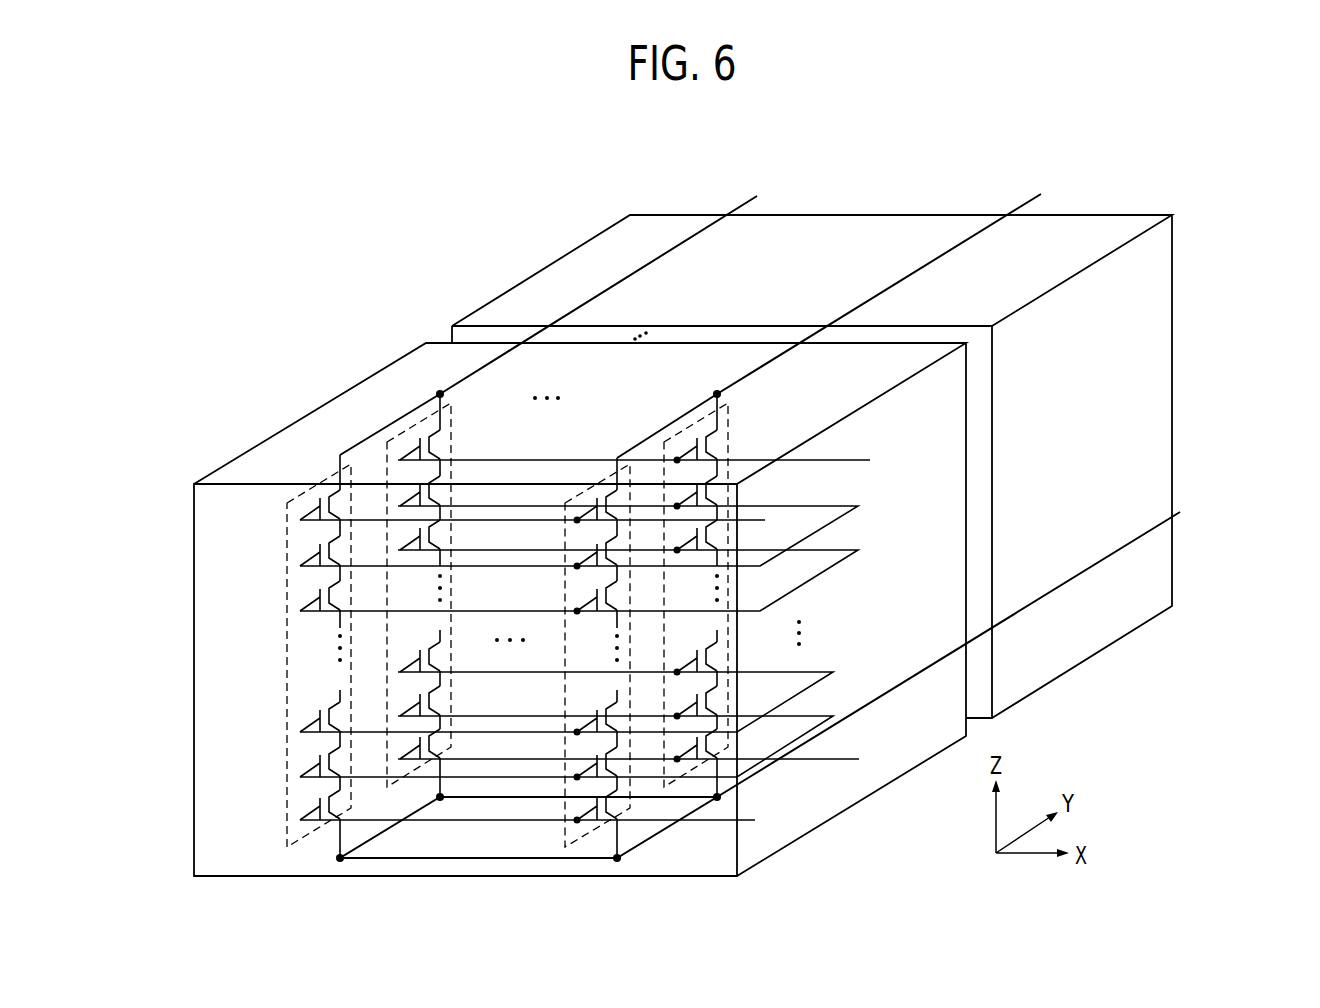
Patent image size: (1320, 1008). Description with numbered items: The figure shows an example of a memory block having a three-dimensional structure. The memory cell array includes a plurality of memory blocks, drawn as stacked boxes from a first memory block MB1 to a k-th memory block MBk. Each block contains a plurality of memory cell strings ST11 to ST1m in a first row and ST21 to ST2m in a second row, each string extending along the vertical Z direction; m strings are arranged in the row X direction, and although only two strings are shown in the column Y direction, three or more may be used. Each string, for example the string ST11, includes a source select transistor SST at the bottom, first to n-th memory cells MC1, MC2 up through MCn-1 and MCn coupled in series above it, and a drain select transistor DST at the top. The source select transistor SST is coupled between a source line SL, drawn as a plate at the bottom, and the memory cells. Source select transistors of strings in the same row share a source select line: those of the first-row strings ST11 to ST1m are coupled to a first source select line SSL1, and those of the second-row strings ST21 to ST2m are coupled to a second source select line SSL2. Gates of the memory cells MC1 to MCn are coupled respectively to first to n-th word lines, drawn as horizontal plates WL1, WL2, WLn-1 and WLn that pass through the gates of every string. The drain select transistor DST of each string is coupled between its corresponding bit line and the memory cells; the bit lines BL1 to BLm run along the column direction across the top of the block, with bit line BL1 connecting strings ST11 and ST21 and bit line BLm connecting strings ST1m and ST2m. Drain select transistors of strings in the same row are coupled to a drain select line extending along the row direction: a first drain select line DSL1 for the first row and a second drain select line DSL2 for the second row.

The memory block MBk is at (560, 258).
The memory block MB1 is at (327, 404).
The memory cell string ST11 is at (277, 643).
The memory cell string ST21 is at (420, 421).
The memory cell string ST1m is at (602, 480).
The memory cell string ST2m is at (698, 418).
The bit line BL1 is at (560, 312).
The bit line BLm is at (840, 313).
The first drain select line DSL1 is at (556, 522).
The second drain select line DSL2 is at (658, 461).
The n-th word line WLn is at (810, 537).
The word line WLn-1 is at (810, 581).
The second word line WL2 is at (785, 702).
The first word line WL1 is at (785, 745).
The first source select line SSL1 is at (549, 823).
The second source select line SSL2 is at (652, 761).
The source line SL is at (773, 678).
The drain select transistor DST is at (300, 506).
The n-th memory cell MCn is at (300, 552).
The memory cell MCn-1 is at (300, 595).
The second memory cell MC2 is at (300, 714).
The first memory cell MC1 is at (300, 758).
The source select transistor SST is at (300, 802).